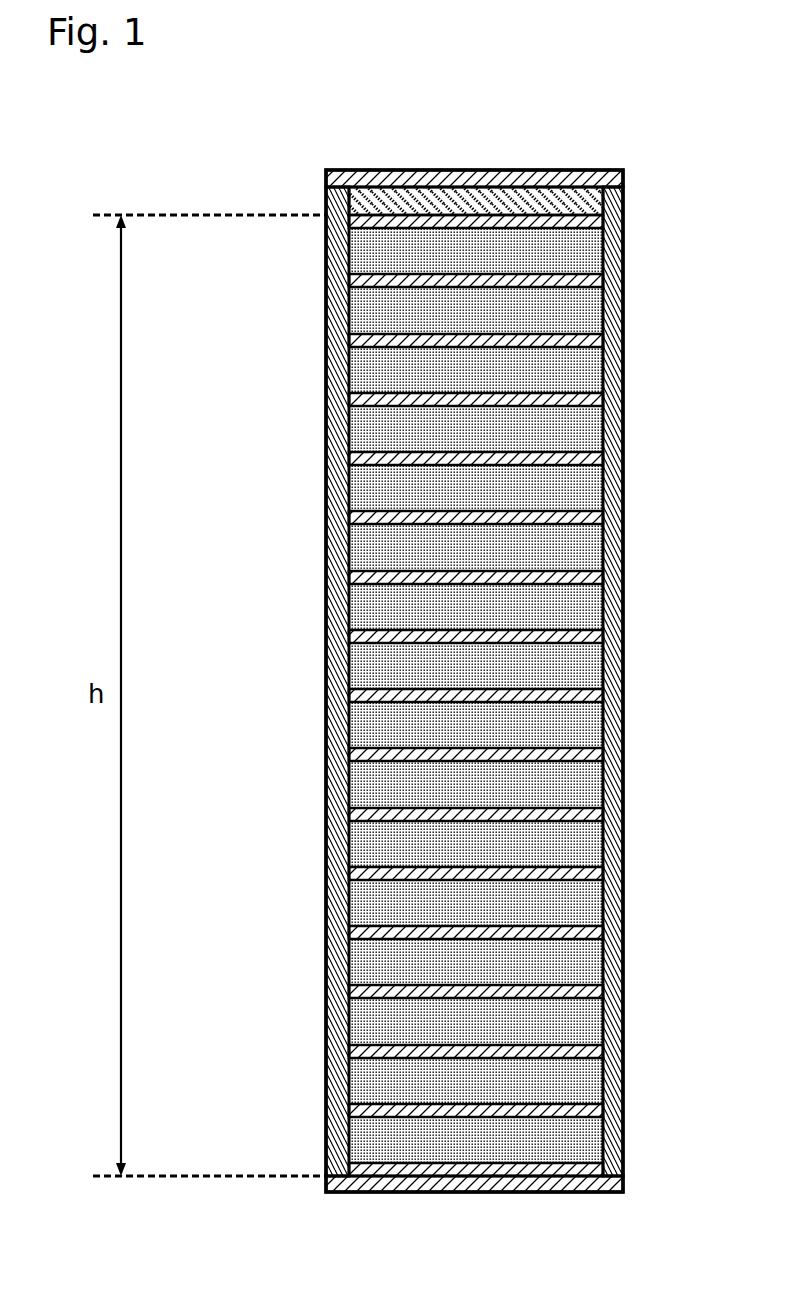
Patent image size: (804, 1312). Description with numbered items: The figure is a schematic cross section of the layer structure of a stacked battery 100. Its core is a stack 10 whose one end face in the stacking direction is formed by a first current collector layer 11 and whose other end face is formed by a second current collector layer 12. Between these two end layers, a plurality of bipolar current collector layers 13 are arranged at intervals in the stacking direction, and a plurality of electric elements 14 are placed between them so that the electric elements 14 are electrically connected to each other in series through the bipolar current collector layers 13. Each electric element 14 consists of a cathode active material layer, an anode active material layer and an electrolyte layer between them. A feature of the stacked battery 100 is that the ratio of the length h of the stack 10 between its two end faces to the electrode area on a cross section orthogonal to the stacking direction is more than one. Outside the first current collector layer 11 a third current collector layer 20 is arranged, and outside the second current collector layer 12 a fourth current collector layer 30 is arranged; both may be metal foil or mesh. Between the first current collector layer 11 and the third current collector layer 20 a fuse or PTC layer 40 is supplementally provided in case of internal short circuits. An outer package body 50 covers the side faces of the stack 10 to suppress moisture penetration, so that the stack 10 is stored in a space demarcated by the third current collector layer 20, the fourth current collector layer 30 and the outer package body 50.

The stacked battery 100 is at (498, 142).
The stack 10 is at (561, 696).
The first current collector layer 11 is at (521, 222).
The second current collector layer 12 is at (521, 1170).
The bipolar current collector layer 13 is at (521, 696).
The electric element 14 is at (700, 1176).
The third current collector layer 20 is at (340, 183).
The fourth current collector layer 30 is at (345, 1185).
The fuse or PTC layer 40 is at (360, 200).
The outer package body 50 is at (335, 697).